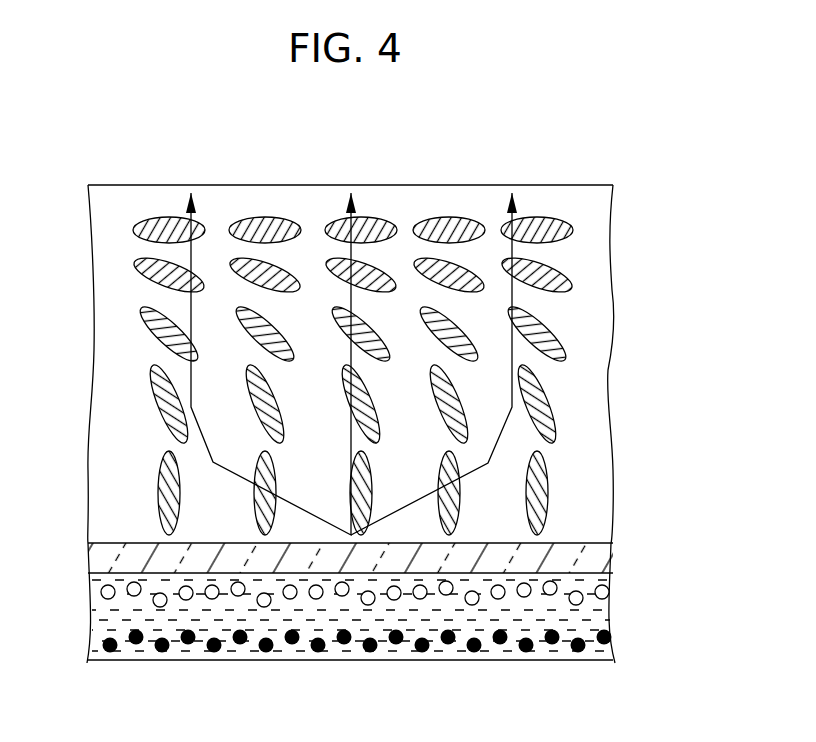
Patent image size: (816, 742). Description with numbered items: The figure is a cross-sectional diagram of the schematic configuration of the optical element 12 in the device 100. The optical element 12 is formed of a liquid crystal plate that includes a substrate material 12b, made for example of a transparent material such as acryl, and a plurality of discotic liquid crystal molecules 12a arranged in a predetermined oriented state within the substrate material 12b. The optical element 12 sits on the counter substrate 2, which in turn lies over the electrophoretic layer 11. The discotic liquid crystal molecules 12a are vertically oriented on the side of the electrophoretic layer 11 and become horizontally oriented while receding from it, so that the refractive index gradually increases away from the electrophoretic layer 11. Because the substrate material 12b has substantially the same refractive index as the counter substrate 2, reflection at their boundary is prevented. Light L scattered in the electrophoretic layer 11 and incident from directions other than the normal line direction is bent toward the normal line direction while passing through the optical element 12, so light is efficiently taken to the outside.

The optical element 100 is at (633, 153).
The optical element 12 is at (418, 364).
The discotic liquid crystal molecules 12a is at (537, 403).
The substrate material 12b is at (597, 425).
The light L is at (190, 308).
The counter substrate 2 is at (597, 557).
The electrophoretic layer 11 is at (597, 613).